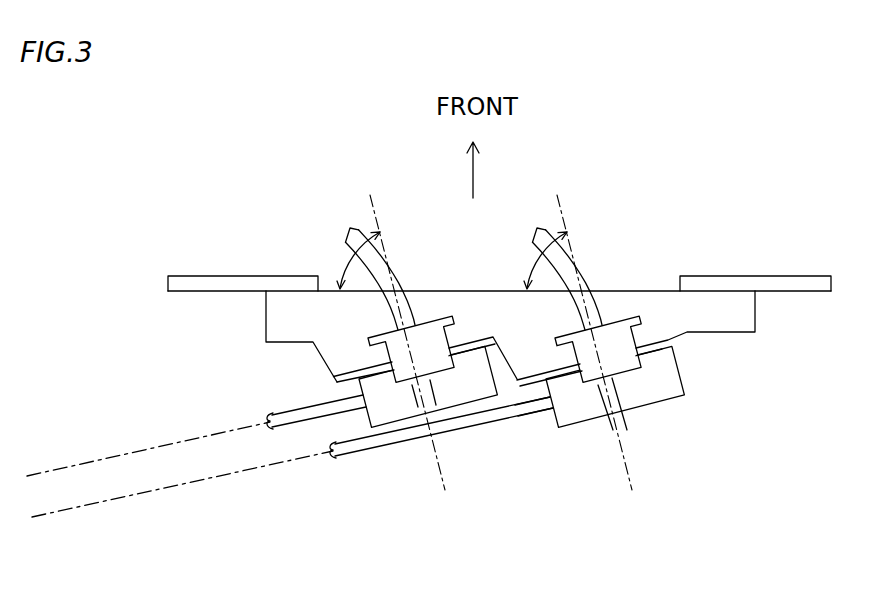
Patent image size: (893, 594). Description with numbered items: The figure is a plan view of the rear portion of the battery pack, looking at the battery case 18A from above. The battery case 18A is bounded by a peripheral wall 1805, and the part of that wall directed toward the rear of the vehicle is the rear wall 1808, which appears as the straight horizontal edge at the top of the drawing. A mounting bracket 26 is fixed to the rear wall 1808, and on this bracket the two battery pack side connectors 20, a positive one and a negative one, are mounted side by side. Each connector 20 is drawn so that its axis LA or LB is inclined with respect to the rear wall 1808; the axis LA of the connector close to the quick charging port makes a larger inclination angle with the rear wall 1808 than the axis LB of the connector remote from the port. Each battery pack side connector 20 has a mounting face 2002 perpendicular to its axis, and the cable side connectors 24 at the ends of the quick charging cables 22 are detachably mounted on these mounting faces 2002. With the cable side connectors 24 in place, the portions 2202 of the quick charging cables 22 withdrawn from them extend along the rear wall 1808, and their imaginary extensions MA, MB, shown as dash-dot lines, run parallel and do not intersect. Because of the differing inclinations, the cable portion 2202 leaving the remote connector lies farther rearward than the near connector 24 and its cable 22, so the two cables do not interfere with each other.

The peripheral wall 1805 is at (195, 319).
The rear wall 1808 is at (201, 292).
The battery case 18A is at (789, 303).
The mounting bracket 26 is at (717, 334).
The cable side connectors 24 is at (471, 404).
The battery pack side connectors 20 is at (410, 385).
The mounting faces 2002 is at (431, 380).
The quick charging cables 22 is at (267, 428).
The portions of the quick charging cables 2202 is at (283, 428).
The imaginary extension MA is at (76, 462).
The imaginary extension MB is at (70, 510).
The axis LA is at (375, 210).
The axis LB is at (563, 210).